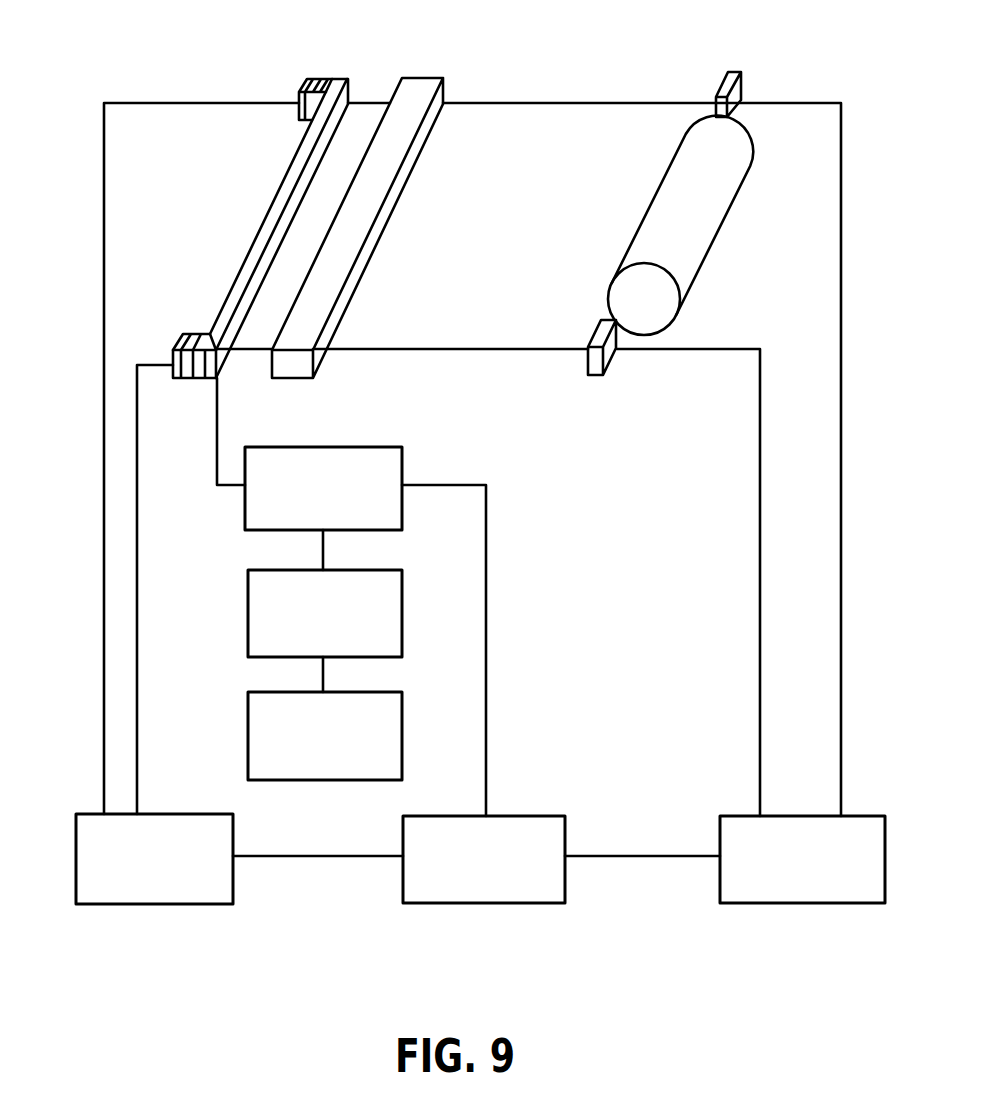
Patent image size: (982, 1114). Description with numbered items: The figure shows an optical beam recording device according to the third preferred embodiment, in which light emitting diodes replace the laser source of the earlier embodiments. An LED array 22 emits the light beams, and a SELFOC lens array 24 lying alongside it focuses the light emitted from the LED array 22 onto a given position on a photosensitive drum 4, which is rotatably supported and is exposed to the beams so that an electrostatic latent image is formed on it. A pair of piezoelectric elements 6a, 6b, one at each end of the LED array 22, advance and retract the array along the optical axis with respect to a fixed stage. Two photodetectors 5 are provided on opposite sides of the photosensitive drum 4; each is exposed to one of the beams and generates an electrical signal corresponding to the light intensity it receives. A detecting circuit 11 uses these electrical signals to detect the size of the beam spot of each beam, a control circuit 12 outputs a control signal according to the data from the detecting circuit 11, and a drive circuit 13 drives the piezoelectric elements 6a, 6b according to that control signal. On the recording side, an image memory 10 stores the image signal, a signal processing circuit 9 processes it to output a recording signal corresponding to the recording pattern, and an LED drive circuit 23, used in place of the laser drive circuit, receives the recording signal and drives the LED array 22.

The photosensitive drum 4 is at (752, 135).
The photodetectors 5 is at (740, 74).
The piezoelectric element 6a is at (190, 334).
The piezoelectric element 6b is at (318, 79).
The signal processing circuit 9 is at (248, 612).
The image memory 10 is at (248, 733).
The detecting circuit 11 is at (735, 816).
The control circuit 12 is at (550, 816).
The drive circuit 13 is at (76, 814).
The LED array 22 is at (350, 102).
The LED drive circuit 23 is at (318, 447).
The SELFOC lens array 24 is at (433, 78).